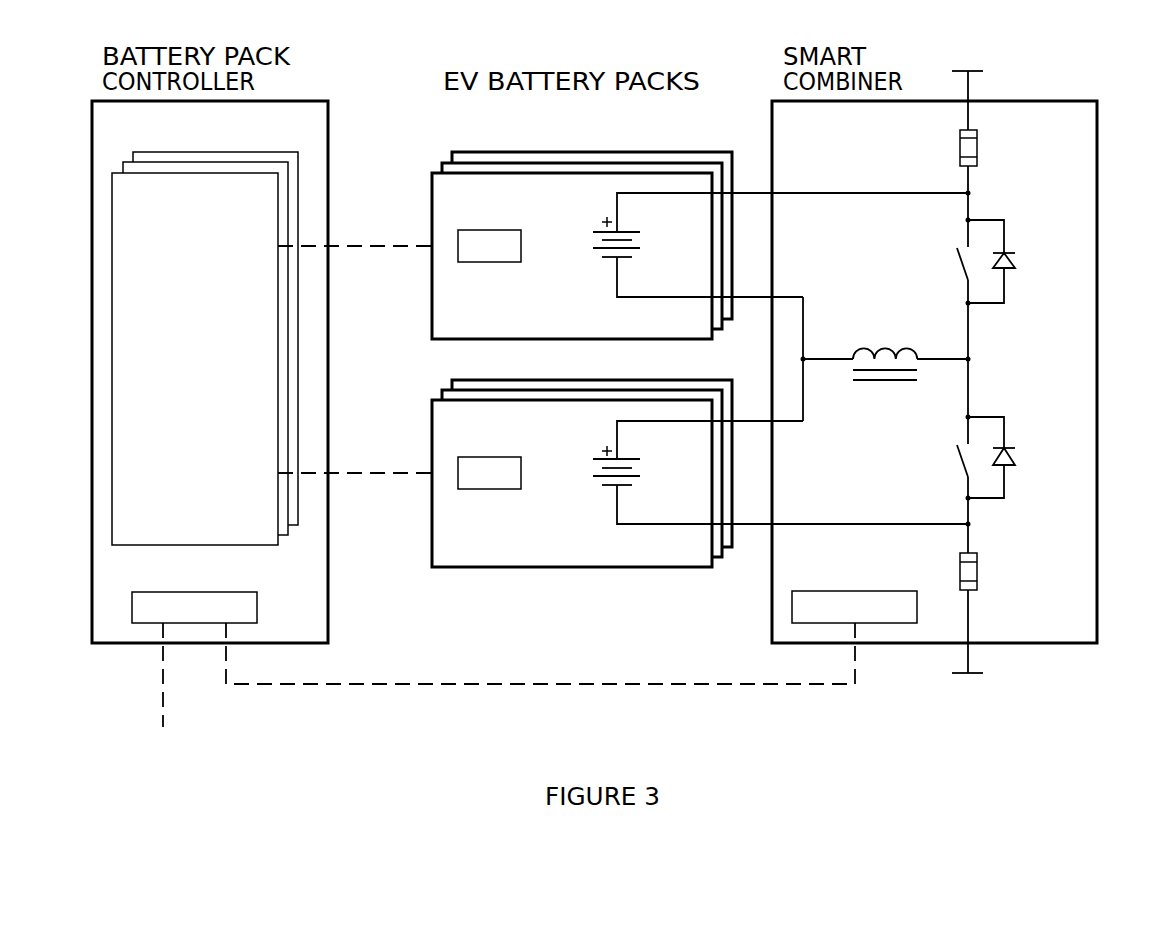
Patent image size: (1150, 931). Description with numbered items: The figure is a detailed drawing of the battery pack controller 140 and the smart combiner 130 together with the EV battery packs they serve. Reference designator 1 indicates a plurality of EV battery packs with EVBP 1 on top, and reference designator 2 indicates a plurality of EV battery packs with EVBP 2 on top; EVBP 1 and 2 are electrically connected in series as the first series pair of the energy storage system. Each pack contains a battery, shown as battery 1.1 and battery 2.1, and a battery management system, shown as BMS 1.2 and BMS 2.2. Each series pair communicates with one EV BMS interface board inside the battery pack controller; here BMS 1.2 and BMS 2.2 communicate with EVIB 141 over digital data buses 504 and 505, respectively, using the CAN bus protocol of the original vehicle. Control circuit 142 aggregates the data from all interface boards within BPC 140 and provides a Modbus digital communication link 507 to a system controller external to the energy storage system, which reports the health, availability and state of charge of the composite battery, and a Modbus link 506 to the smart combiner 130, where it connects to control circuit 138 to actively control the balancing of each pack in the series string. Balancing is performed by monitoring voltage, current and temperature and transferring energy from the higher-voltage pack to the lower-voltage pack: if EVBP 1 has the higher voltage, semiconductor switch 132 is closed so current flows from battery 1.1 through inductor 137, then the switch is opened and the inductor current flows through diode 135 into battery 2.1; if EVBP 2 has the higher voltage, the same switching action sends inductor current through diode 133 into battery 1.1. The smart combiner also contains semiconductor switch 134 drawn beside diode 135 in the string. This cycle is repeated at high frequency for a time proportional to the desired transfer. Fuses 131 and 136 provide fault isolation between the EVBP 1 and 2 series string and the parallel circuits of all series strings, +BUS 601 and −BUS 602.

The battery pack controller 140 is at (148, 132).
The EV BMS interface board 141 is at (165, 205).
The control circuit 142 is at (262, 608).
The smart combiner 130 is at (829, 133).
The fuse 131 is at (983, 157).
The semiconductor switch 132 is at (960, 268).
The diode 133 is at (1020, 258).
The semiconductor switch 134 is at (960, 467).
The diode 135 is at (1020, 457).
The fuse 136 is at (983, 580).
The inductor 137 is at (885, 388).
The control circuit 138 is at (855, 587).
The EV battery pack 1 is at (459, 207).
The battery 1.1 is at (643, 247).
The BMS 1.2 is at (525, 247).
The EV battery pack 2 is at (459, 435).
The battery 2.1 is at (643, 474).
The BMS 2.2 is at (525, 474).
The digital data bus 504 is at (350, 237).
The digital data bus 505 is at (350, 465).
The Modbus digital communication link 506 is at (350, 672).
The Modbus digital communication link 507 is at (154, 675).
The +BUS 601 is at (1008, 53).
The −BUS 602 is at (1008, 688).